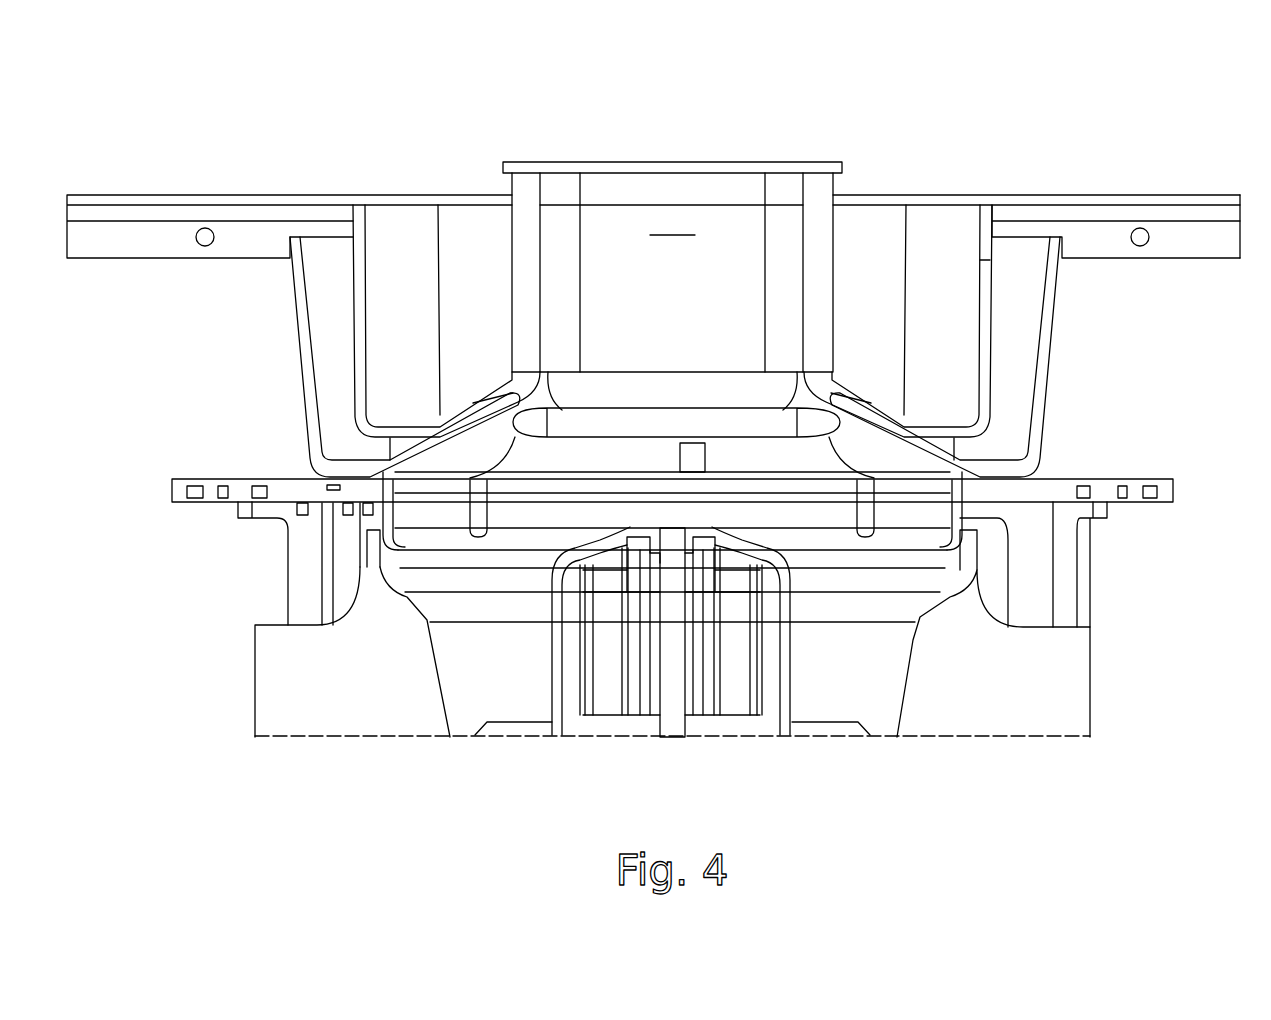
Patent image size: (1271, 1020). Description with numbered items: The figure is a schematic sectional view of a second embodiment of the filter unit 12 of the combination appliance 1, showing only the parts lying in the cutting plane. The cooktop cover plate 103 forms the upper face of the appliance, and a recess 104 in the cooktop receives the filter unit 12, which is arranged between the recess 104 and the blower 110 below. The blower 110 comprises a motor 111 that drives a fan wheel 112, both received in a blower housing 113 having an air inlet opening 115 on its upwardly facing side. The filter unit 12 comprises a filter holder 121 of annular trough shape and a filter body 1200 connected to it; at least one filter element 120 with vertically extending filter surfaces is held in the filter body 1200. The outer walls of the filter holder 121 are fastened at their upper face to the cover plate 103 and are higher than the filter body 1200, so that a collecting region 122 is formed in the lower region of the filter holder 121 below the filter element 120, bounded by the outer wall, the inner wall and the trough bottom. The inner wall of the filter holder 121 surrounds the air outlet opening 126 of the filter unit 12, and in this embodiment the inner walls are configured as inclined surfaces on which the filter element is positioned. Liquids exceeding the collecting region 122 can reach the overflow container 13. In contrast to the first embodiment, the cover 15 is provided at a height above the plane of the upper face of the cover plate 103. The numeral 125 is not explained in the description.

The combination appliance 1 is at (1193, 173).
The filter unit 12 is at (850, 143).
The overflow container 13 is at (1058, 293).
The cover 15 is at (632, 162).
The cover plate 103 is at (247, 195).
The recess 104 is at (363, 205).
The blower 110 is at (895, 748).
The motor 111 is at (658, 698).
The fan wheel 112 is at (320, 712).
The blower housing 113 is at (247, 479).
The air inlet opening 115 is at (545, 479).
The filter element 120 is at (527, 220).
The filter holder 121 is at (983, 283).
The collecting region 122 is at (953, 418).
The collar 125 is at (433, 195).
The air outlet opening 126 is at (812, 385).
The filter body 1200 is at (798, 195).